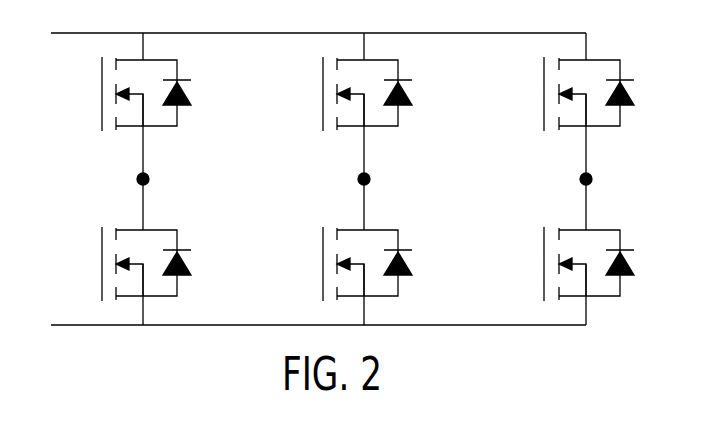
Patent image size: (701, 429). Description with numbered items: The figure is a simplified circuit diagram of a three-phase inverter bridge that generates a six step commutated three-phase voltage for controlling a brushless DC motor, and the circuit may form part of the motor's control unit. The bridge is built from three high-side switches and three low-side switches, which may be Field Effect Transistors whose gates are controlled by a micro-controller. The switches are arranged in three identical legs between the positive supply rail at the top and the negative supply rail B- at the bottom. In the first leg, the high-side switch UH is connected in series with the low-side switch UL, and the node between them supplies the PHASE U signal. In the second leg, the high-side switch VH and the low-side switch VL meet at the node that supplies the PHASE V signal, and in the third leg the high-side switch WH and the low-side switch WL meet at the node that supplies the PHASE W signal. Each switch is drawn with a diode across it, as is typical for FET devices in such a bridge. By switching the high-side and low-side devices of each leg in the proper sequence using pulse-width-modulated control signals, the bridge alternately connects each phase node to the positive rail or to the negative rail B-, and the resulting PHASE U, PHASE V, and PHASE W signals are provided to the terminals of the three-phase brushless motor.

The negative supply rail B- is at (318, 342).
The phase U high-side switch UH is at (102, 94).
The phase U low-side switch UL is at (102, 264).
The phase V high-side switch VH is at (323, 94).
The phase V low-side switch VL is at (323, 264).
The phase W high-side switch WH is at (544, 94).
The phase W low-side switch WL is at (544, 264).
The PHASE U signal PHASE U is at (137, 179).
The PHASE V signal PHASE V is at (358, 179).
The PHASE W signal PHASE W is at (580, 179).